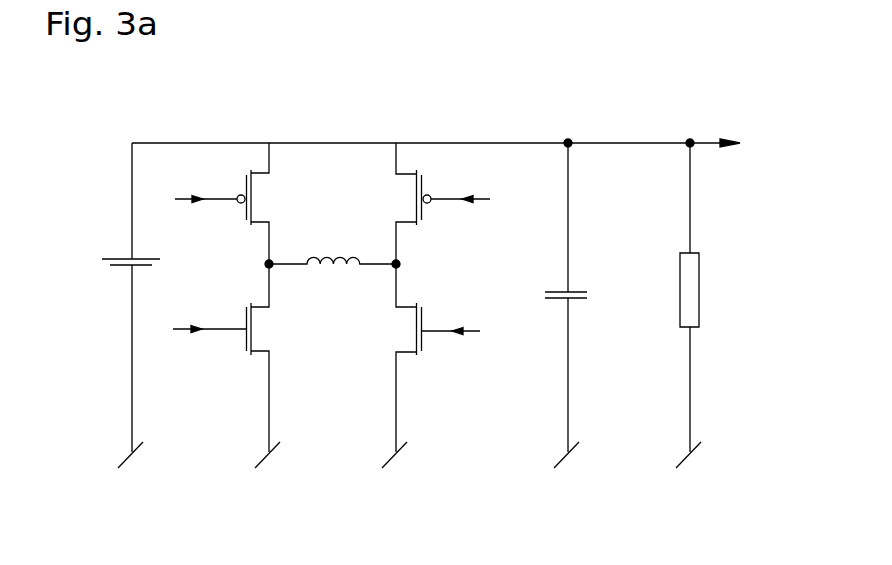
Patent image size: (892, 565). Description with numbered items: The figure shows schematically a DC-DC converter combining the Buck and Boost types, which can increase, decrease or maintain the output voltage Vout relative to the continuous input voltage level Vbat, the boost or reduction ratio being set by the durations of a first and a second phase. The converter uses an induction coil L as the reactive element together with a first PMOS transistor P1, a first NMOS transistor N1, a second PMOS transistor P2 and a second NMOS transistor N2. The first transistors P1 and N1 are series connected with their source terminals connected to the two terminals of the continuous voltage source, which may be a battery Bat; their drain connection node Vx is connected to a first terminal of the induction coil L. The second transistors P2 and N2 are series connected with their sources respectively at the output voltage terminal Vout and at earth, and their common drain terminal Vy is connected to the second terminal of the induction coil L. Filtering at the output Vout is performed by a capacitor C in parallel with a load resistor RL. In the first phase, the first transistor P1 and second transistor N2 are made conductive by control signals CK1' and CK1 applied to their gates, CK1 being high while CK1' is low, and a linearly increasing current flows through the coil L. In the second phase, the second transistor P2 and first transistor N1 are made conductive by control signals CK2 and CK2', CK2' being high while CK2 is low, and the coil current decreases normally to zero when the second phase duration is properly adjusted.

The continuous input voltage level Vbat is at (264, 126).
The battery Bat is at (123, 305).
The first PMOS transistor P1 is at (262, 203).
The reverse control signal CK1' is at (206, 187).
The first NMOS transistor N1 is at (267, 366).
The control signal CK2' is at (210, 318).
The drain terminal connection node Vx is at (250, 257).
The induction coil L is at (332, 248).
The drain terminal Vy is at (412, 255).
The second PMOS transistor P2 is at (401, 203).
The reverse control signal CK2 is at (460, 188).
The second NMOS transistor N2 is at (398, 366).
The control signal CK1 is at (451, 320).
The output voltage Vout is at (587, 128).
The capacitor C is at (568, 303).
The load resistor RL is at (707, 303).